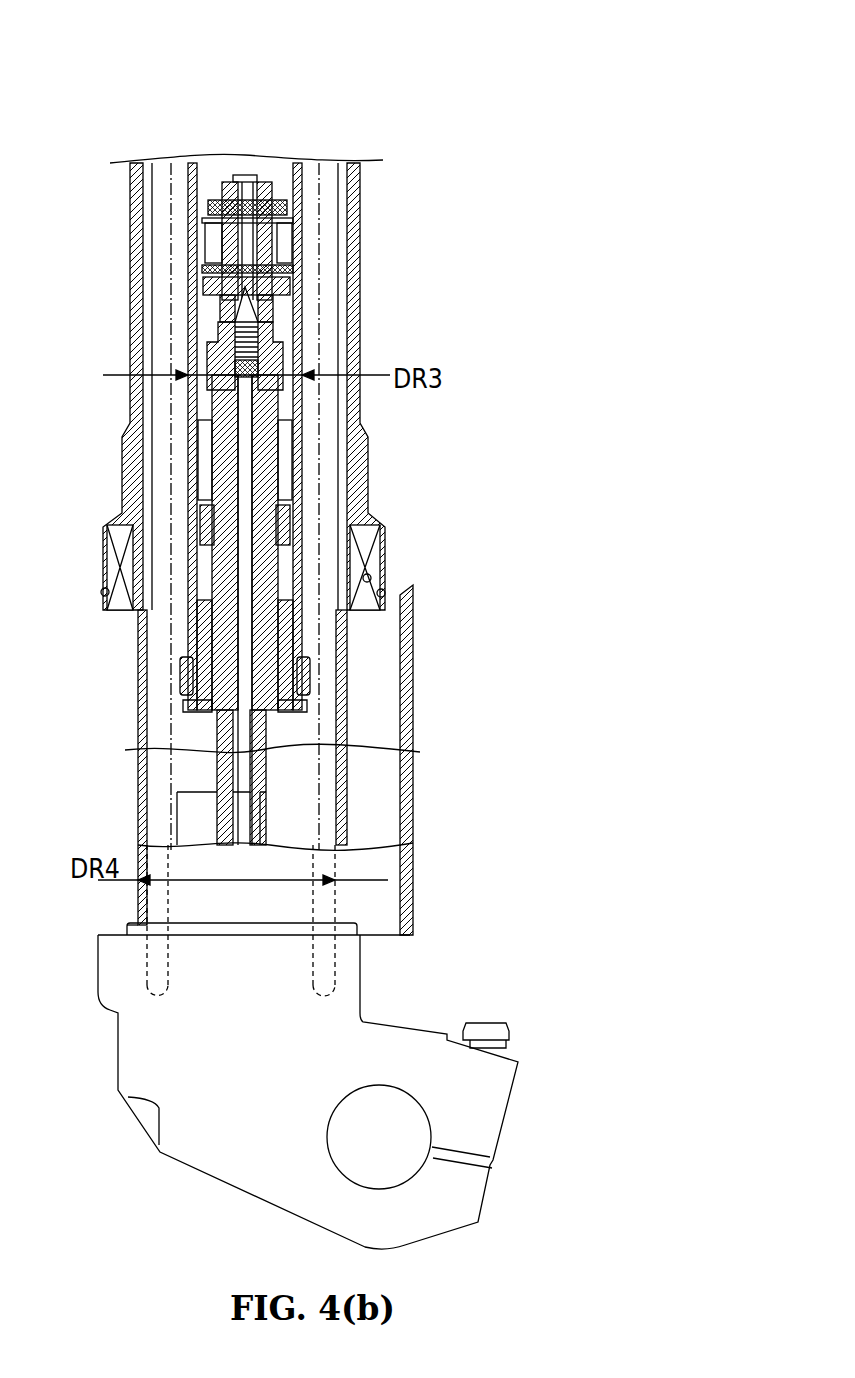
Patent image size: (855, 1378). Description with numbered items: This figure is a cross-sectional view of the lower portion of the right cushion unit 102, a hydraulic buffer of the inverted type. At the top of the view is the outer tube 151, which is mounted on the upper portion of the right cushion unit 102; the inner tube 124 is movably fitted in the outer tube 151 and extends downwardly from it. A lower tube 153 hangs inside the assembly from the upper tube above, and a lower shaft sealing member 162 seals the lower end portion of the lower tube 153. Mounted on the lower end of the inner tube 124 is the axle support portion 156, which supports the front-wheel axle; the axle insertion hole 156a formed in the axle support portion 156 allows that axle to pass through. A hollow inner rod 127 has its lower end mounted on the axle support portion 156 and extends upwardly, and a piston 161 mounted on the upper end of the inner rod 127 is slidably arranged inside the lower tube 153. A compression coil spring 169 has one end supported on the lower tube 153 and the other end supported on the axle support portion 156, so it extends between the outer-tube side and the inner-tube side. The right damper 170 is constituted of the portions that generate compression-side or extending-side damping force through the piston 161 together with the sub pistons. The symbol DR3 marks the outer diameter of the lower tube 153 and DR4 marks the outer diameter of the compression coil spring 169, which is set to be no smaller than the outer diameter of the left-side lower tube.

The right cushion unit 102 is at (170, 99).
The outer tube 151 is at (130, 273).
The right damper 170 is at (280, 187).
The piston 161 is at (285, 212).
The lower tube 153 is at (303, 443).
The lower shaft sealing member 162 is at (306, 638).
The inner tube 124 is at (138, 708).
The inner rod 127 is at (276, 774).
The compression coil spring 169 is at (338, 967).
The axle support portion 156 is at (162, 1157).
The axle insertion hole 156a is at (345, 1165).